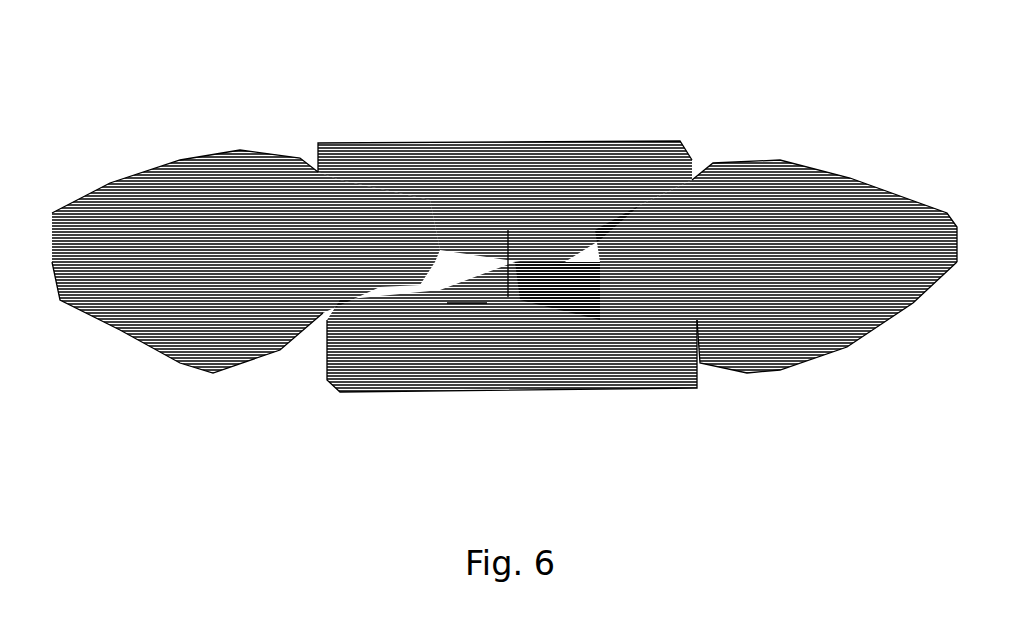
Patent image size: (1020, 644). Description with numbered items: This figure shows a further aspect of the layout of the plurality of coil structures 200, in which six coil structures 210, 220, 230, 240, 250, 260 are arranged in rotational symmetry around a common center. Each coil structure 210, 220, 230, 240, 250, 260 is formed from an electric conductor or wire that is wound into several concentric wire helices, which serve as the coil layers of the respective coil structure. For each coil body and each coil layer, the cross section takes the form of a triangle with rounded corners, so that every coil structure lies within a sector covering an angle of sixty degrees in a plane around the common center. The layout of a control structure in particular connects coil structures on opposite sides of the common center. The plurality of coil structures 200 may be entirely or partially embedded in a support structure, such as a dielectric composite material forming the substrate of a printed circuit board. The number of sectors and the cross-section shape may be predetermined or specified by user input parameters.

The plurality of coil structures 200 is at (243, 70).
The coil structure 210 is at (517, 140).
The coil structure 220 is at (887, 177).
The coil structure 230 is at (877, 360).
The coil structure 240 is at (505, 390).
The coil structure 250 is at (140, 350).
The coil structure 260 is at (93, 202).